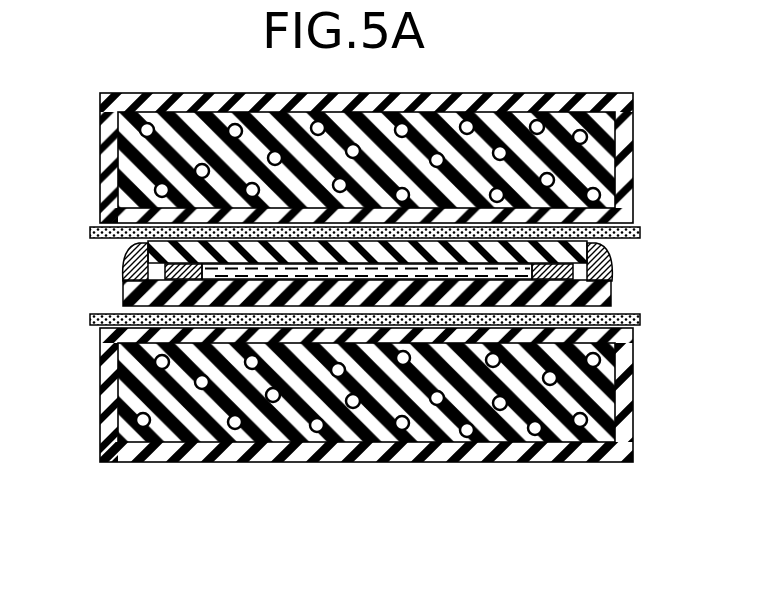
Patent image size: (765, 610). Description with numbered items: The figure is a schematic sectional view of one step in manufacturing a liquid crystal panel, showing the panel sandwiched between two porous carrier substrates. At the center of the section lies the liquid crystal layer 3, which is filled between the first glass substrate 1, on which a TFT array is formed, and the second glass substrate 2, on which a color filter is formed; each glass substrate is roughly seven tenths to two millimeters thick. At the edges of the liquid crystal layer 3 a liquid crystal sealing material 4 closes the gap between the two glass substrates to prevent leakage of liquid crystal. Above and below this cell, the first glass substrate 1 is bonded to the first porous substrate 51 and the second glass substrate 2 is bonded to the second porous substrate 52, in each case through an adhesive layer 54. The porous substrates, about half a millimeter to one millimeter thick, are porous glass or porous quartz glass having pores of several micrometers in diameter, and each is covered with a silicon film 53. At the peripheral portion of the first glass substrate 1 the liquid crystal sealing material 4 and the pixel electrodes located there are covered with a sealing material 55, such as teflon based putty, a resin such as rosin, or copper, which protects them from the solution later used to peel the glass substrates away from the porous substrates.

The first glass substrate 1 is at (310, 272).
The second glass substrate 2 is at (403, 258).
The liquid crystal layer 3 is at (465, 280).
The liquid crystal sealing material 4 is at (180, 270).
The first porous substrate 51 is at (603, 377).
The second porous substrate 52 is at (602, 145).
The silicon film 53 is at (628, 178).
The adhesive layer 54 is at (642, 230).
The sealing material 55 is at (123, 267).